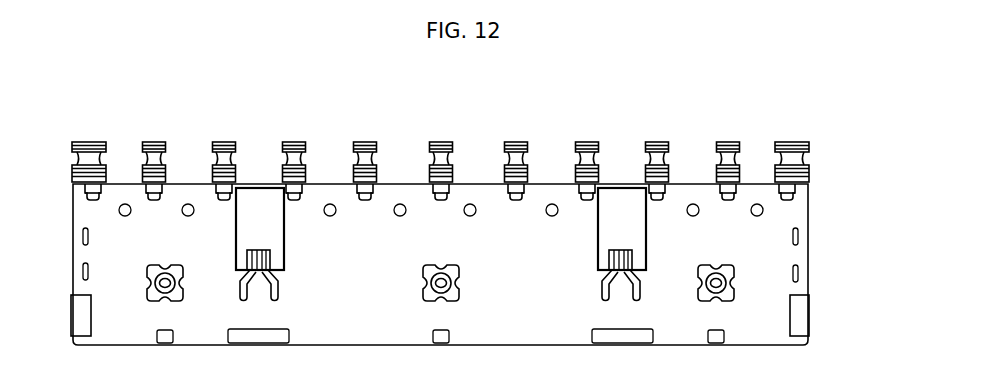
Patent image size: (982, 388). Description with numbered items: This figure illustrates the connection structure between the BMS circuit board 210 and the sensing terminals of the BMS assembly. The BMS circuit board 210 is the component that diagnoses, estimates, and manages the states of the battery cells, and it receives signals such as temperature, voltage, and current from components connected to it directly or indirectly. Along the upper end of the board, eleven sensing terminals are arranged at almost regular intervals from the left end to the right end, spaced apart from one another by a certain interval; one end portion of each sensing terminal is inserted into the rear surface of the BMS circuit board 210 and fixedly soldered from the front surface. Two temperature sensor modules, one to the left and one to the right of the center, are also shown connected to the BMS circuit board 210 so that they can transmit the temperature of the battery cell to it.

The BMS circuit board 210 is at (772, 256).